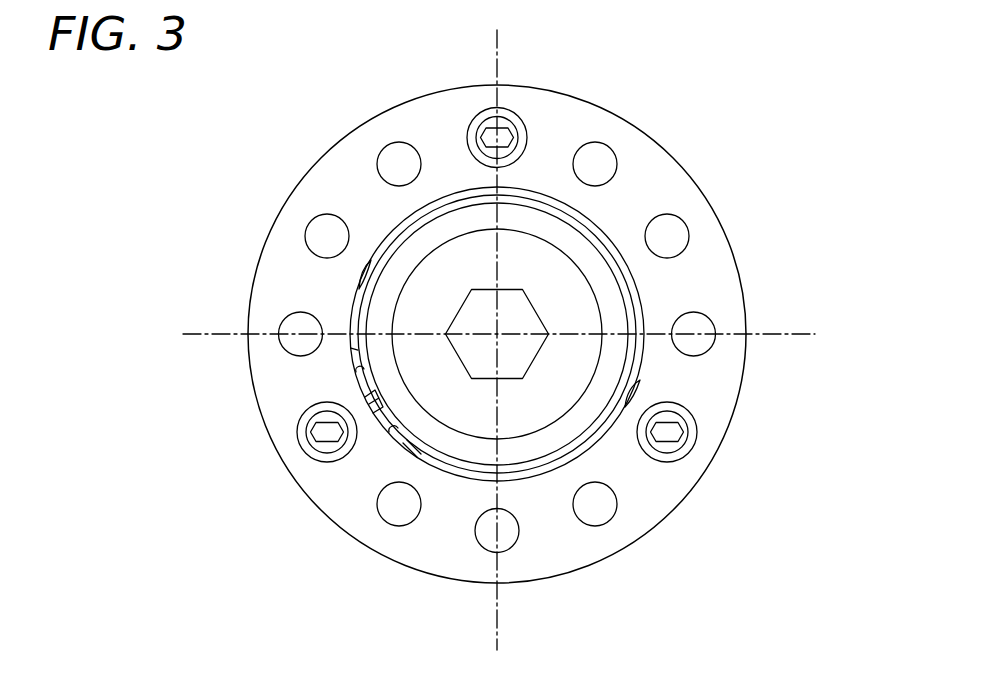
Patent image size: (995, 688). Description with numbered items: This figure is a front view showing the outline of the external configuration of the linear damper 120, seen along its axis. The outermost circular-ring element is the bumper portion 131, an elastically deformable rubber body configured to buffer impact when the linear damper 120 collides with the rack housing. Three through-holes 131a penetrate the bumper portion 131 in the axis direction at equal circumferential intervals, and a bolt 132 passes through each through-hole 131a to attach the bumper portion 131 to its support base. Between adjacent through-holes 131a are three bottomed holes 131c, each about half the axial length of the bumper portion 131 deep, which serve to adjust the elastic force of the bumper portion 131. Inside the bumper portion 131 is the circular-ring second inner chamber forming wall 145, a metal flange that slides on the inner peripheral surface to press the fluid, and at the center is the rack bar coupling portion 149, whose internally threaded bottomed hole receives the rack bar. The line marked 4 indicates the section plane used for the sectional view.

The section line 4- 4 is at (508, 29).
The linear damper 120 is at (288, 54).
The bumper portion 131 is at (313, 177).
The through-hole 131a is at (322, 455).
The bottomed hole 131c is at (323, 258).
The bolt 132 is at (512, 113).
The second inner chamber forming wall 145 is at (602, 435).
The rack bar coupling portion 149 is at (585, 303).